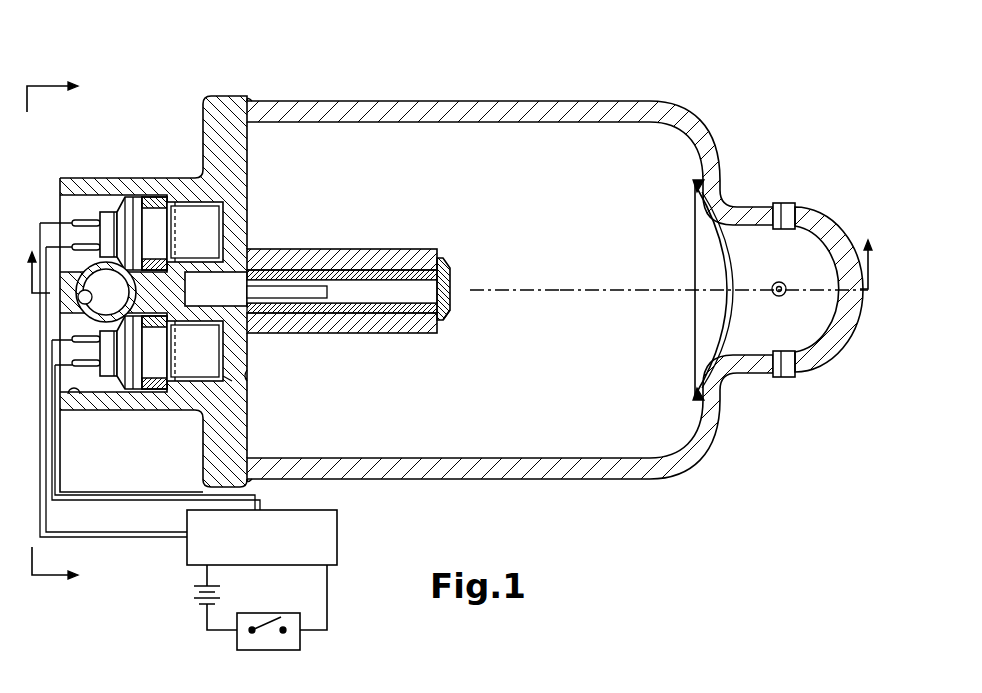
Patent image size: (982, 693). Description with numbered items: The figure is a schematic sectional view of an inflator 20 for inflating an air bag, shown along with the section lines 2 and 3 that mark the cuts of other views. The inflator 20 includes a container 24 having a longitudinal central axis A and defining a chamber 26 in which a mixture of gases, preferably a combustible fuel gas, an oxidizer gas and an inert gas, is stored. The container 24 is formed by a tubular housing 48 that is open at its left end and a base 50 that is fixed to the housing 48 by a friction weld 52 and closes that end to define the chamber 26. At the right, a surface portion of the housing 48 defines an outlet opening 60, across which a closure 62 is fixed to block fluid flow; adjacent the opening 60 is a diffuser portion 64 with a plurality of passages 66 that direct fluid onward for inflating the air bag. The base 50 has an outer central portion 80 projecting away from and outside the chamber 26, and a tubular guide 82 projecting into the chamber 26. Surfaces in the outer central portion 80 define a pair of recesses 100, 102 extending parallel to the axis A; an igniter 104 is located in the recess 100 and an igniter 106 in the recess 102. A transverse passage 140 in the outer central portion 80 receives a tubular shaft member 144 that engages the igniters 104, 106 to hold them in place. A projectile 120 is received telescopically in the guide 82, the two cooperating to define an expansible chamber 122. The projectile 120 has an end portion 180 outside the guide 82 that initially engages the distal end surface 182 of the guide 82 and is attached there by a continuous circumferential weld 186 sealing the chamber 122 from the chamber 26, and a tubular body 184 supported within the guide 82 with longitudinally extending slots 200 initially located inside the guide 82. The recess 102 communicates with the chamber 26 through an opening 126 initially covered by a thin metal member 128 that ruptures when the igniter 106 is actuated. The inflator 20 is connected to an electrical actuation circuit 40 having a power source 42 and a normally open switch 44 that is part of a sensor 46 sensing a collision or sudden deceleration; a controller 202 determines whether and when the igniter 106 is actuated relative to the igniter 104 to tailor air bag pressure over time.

The inflator 20 is at (503, 80).
The container 24 is at (241, 88).
The chamber 26 is at (568, 224).
The electrical actuation circuit 40 is at (362, 616).
The power source 42 is at (197, 600).
The switch 44 is at (265, 622).
The sensor 46 is at (300, 645).
The tubular housing 48 is at (400, 107).
The base 50 is at (225, 133).
The friction weld 52 is at (250, 100).
The outlet opening 60 is at (744, 230).
The closure 62 is at (752, 254).
The diffuser portion 64 is at (830, 360).
The passages 66 is at (772, 292).
The outer central portion 80 is at (72, 182).
The tubular guide 82 is at (384, 257).
The recess 100 is at (103, 200).
The recess 102 is at (75, 398).
The igniter 104 is at (188, 232).
The igniter 106 is at (222, 343).
The projectile 120 is at (470, 250).
The expansible chamber 122 is at (216, 289).
The opening 126 is at (250, 376).
The thin metal member 128 is at (250, 380).
The passage 140 is at (100, 320).
The shaft member 144 is at (148, 392).
The end portion 180 is at (447, 292).
The distal end surface 182 is at (447, 308).
The tubular body 184 is at (412, 326).
The circumferential weld 186 is at (440, 257).
The slots 200 is at (288, 277).
The controller 202 is at (338, 535).
The section line 2 is at (451, 256).
The section line 3 is at (65, 333).
The longitudinal central axis A is at (565, 288).